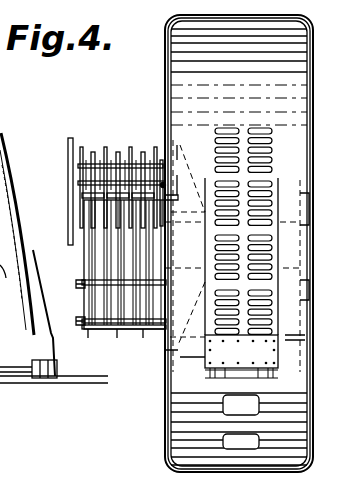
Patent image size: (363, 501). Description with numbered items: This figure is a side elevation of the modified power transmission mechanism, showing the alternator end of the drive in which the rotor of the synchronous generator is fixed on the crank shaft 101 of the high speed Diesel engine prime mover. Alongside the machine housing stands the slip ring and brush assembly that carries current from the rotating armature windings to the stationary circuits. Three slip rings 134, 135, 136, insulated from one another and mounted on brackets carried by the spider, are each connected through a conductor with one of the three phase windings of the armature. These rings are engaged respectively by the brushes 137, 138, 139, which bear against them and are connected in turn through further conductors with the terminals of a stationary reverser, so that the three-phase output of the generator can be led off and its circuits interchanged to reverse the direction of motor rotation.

The crank shaft 101 is at (306, 216).
The slip ring 134 is at (143, 338).
The slip ring 135 is at (117, 330).
The slip ring 136 is at (91, 330).
The brush 137 is at (152, 150).
The brush 138 is at (122, 150).
The brush 139 is at (98, 160).